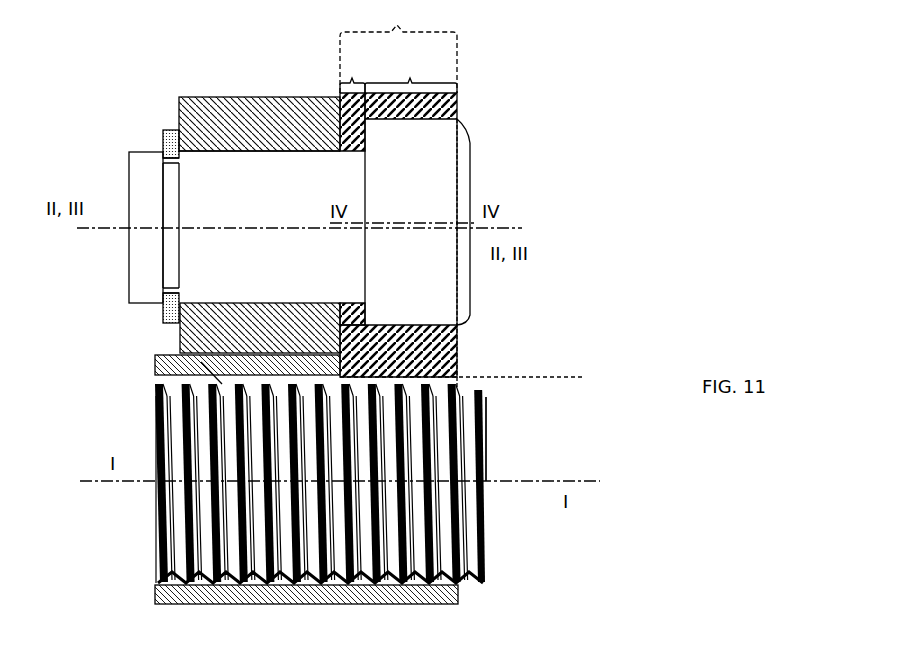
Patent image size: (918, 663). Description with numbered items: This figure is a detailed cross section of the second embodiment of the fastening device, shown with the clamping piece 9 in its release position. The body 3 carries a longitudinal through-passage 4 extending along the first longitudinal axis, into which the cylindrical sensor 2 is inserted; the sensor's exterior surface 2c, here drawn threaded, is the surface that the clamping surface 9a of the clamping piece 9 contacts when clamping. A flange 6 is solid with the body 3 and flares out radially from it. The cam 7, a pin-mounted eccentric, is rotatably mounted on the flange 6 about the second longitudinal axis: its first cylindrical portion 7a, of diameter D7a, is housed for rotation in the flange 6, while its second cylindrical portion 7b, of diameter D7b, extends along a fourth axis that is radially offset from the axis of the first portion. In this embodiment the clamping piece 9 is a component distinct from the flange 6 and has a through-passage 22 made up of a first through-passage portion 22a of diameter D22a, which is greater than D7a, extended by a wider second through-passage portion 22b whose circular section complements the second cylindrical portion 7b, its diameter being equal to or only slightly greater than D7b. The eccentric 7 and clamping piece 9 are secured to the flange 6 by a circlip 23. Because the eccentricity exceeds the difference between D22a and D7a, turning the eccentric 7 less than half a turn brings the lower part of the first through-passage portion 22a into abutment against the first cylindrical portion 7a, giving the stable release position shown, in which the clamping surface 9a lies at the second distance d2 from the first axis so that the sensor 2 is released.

The sensor 2 is at (497, 570).
The exterior surface 2c is at (472, 415).
The body 3 is at (260, 610).
The longitudinal through-passage 4 is at (182, 350).
The flange 6 is at (220, 90).
The cam 7 is at (482, 149).
The first cylindrical portion 7a is at (300, 150).
The second cylindrical portion 7b is at (430, 138).
The clamping piece 9 is at (465, 343).
The clamping surface 9a is at (427, 378).
The through-passage 22 is at (398, 46).
The first through-passage portion 22a is at (358, 187).
The second through-passage portion 22b is at (411, 84).
The circlip 23 is at (170, 130).
The diameter of the first cylindrical portion D7a is at (242, 296).
The diameter of the first through-passage portion D22a is at (356, 296).
The diameter of the second cylindrical portion D7b is at (443, 318).
The second distance d2 is at (567, 384).